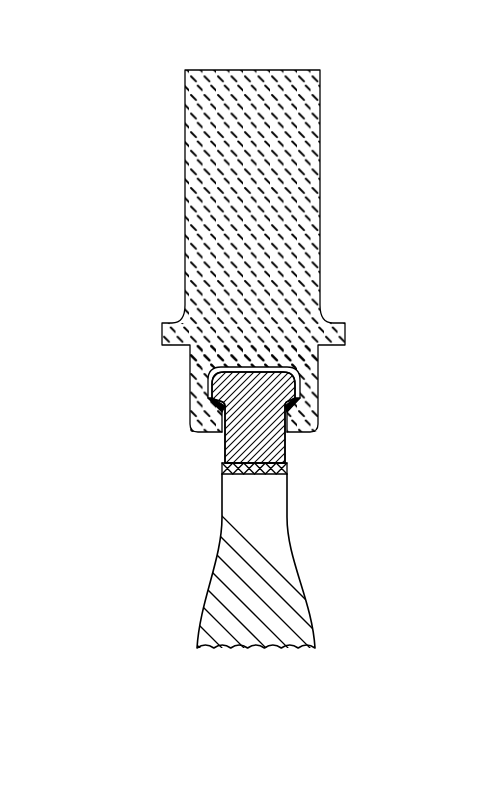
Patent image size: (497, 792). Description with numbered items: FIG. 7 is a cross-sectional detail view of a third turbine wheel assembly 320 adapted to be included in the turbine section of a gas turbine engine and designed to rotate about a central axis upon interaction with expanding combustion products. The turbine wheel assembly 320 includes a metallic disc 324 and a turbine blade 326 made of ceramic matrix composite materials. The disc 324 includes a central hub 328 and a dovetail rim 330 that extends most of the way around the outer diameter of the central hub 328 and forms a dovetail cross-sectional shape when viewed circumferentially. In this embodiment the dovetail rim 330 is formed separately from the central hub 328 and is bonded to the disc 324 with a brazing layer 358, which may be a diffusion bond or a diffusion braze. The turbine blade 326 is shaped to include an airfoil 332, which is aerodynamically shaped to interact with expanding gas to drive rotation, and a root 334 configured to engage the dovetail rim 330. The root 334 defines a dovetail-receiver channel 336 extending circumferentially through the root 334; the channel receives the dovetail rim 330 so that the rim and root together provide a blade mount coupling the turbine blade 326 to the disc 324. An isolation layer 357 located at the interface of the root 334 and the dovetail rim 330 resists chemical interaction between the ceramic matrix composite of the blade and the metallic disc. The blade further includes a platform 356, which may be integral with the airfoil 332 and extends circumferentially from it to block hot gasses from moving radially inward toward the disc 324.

The turbine wheel assembly 320 is at (127, 118).
The turbine blade 326 is at (348, 80).
The airfoil 332 is at (320, 188).
The dovetail rim 330 is at (276, 365).
The dovetail-receiver channel 336 is at (238, 363).
The platform 356 is at (345, 334).
The root 334 is at (318, 385).
The isolation layer 357 is at (268, 438).
The brazing layer 358 is at (287, 468).
The disc 324 is at (323, 509).
The central hub 328 is at (313, 595).